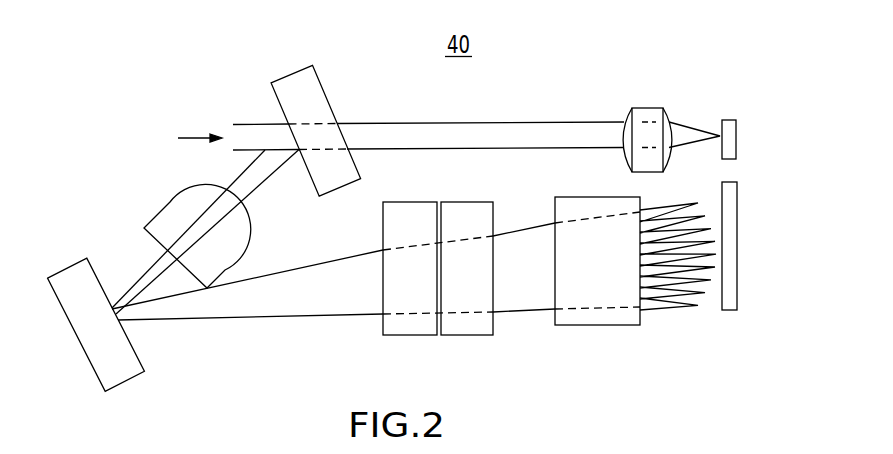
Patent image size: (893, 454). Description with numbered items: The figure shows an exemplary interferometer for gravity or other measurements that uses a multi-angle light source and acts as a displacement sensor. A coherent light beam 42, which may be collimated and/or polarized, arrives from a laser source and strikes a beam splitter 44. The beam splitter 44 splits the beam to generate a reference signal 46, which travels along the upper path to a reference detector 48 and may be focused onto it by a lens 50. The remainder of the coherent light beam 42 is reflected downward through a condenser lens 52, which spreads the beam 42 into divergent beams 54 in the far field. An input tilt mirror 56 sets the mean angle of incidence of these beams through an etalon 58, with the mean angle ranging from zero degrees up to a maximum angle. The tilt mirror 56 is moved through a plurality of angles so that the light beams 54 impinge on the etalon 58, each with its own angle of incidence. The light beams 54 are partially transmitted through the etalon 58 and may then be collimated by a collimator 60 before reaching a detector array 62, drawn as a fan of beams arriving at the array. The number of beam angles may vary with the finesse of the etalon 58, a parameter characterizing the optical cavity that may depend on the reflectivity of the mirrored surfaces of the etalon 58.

The coherent light beam 42 is at (245, 124).
The beam splitter 44 is at (292, 73).
The reference signal 46 is at (412, 122).
The reference detector 48 is at (728, 120).
The lens 50 is at (648, 108).
The condenser lens 52 is at (168, 200).
The divergent beams 54 is at (295, 316).
The input tilt mirror 56 is at (68, 265).
The etalon 58 is at (408, 336).
The collimator 60 is at (598, 326).
The detector array 62 is at (728, 311).